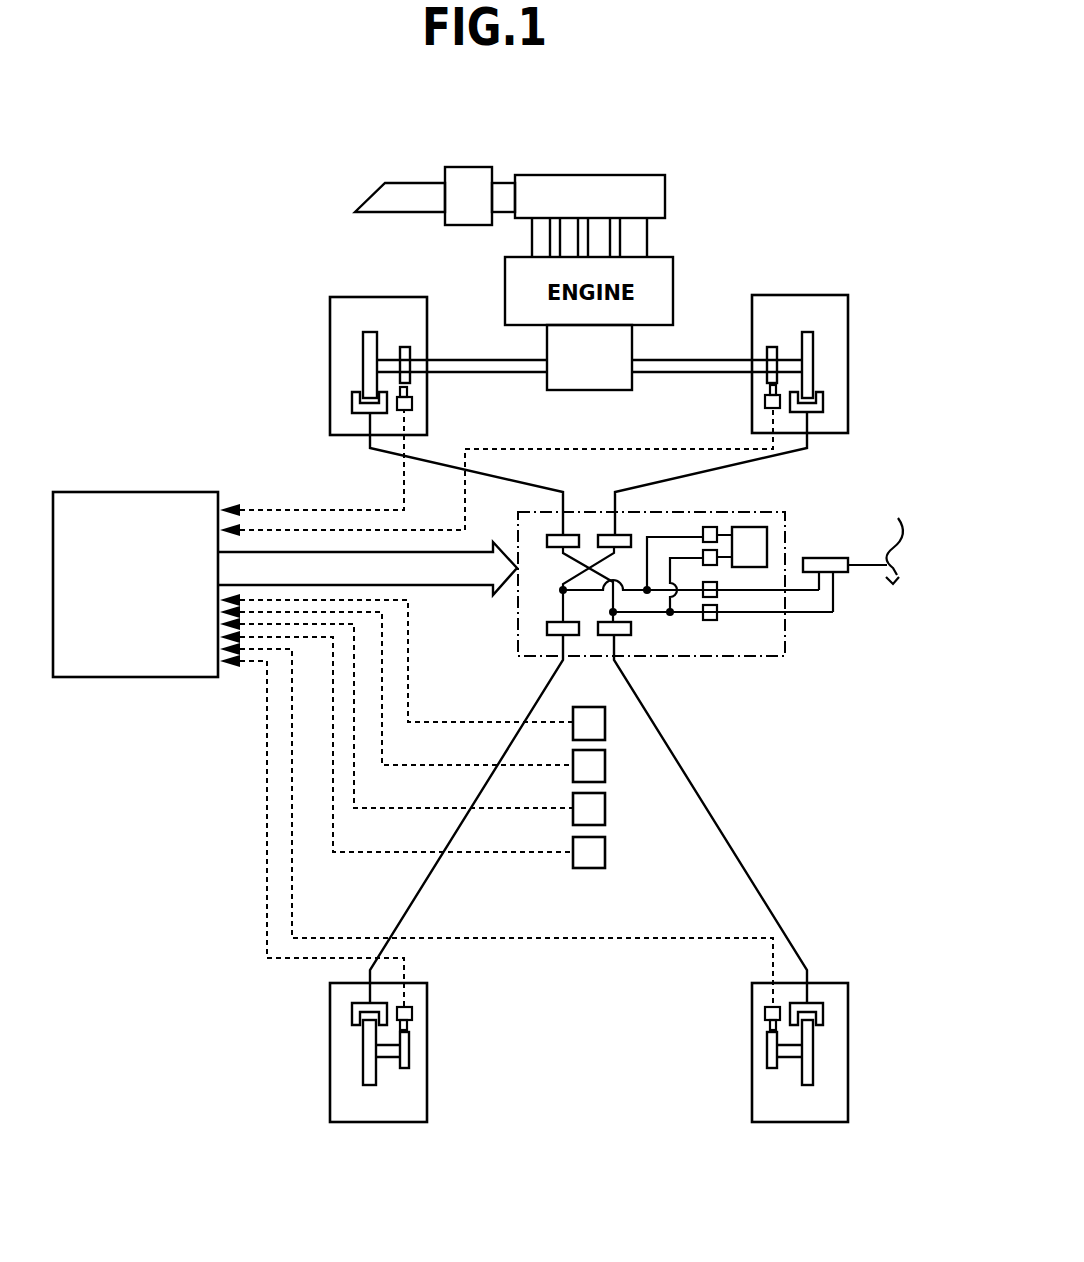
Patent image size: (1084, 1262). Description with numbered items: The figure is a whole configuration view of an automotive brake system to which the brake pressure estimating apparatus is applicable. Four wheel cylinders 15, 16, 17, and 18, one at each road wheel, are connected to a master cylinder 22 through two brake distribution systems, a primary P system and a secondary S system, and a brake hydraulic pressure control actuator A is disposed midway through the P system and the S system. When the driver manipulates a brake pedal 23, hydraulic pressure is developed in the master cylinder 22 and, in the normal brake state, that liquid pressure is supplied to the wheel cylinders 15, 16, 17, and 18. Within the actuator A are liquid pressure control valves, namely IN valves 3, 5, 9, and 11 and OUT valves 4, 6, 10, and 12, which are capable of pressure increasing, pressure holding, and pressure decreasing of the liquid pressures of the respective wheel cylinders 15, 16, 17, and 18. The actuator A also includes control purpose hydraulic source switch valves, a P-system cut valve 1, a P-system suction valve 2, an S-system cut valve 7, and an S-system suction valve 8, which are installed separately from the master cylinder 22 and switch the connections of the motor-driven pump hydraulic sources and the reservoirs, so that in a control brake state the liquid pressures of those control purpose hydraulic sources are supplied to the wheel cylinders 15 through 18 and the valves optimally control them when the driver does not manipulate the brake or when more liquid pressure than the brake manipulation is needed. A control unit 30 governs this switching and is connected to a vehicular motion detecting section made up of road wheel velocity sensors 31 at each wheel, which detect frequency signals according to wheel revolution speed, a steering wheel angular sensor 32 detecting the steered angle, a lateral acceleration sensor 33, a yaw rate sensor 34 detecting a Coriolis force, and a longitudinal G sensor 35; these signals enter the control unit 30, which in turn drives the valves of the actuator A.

The P-system cut valve 1 is at (717, 612).
The P-system suction valve 2 is at (717, 532).
The IN valve 3 is at (582, 500).
The OUT valve 4 is at (565, 535).
The IN valve 5 is at (529, 660).
The OUT valve 6 is at (607, 637).
The S-system cut valve 7 is at (710, 597).
The S-system suction valve 8 is at (735, 550).
The IN valve 9 is at (668, 513).
The OUT valve 10 is at (622, 533).
The IN valve 11 is at (497, 631).
The OUT valve 12 is at (547, 628).
The wheel cylinder 15 is at (352, 404).
The wheel cylinder 16 is at (848, 1012).
The wheel cylinder 17 is at (848, 405).
The wheel cylinder 18 is at (352, 1012).
The master cylinder 22 is at (822, 558).
The brake pedal 23 is at (884, 534).
The control unit 30 is at (162, 492).
The road wheel velocity sensor 31 is at (413, 404).
The steering wheel angular sensor 32 is at (605, 722).
The lateral acceleration sensor 33 is at (605, 765).
The yaw rate sensor 34 is at (605, 808).
The longitudinal G sensor 35 is at (605, 852).
The brake hydraulic pressure control actuator A is at (785, 633).